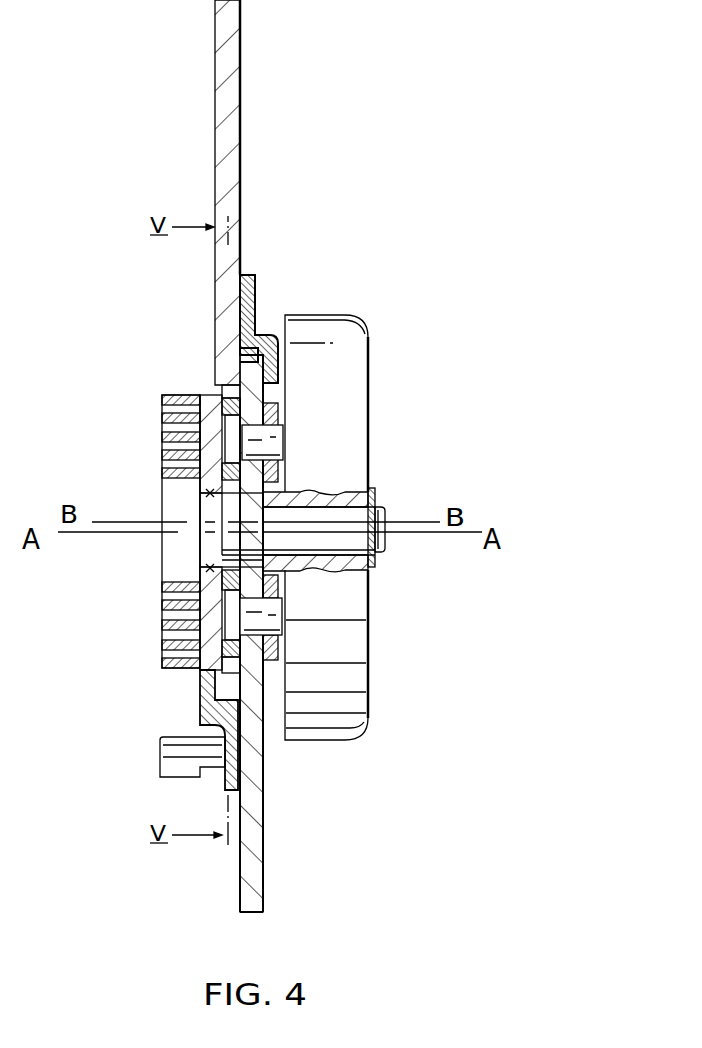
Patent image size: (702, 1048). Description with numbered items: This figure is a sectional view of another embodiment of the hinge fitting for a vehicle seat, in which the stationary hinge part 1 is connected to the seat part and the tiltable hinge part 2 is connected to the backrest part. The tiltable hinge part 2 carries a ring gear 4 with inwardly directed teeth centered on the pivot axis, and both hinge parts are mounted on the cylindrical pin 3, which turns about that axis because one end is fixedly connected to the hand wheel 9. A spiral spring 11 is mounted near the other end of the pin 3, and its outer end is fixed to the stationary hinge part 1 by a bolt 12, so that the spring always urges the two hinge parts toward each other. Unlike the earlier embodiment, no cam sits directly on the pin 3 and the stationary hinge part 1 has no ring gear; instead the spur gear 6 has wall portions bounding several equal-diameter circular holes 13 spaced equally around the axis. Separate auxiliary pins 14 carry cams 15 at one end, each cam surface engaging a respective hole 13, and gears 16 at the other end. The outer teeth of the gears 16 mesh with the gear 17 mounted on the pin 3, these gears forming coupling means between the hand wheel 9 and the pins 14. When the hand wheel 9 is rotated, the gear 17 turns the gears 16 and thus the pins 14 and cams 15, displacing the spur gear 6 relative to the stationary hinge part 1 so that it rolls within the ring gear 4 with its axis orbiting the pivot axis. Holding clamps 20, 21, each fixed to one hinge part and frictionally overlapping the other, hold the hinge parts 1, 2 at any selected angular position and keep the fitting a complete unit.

The stationary hinge part 1 is at (252, 886).
The tiltable hinge part 2 is at (226, 24).
The pin 3 is at (343, 510).
The ring gear 4 is at (240, 390).
The spur gear 6 is at (220, 477).
The hand wheel 9 is at (362, 382).
The spiral spring 11 is at (165, 420).
The bolt 12 is at (165, 750).
The circular holes 13 is at (213, 392).
The auxiliary pins 14 is at (275, 612).
The cams 15 is at (200, 448).
The gears 16 is at (272, 412).
The gear 17 is at (280, 572).
The holding clamp 20 is at (243, 311).
The holding clamp 21 is at (225, 780).